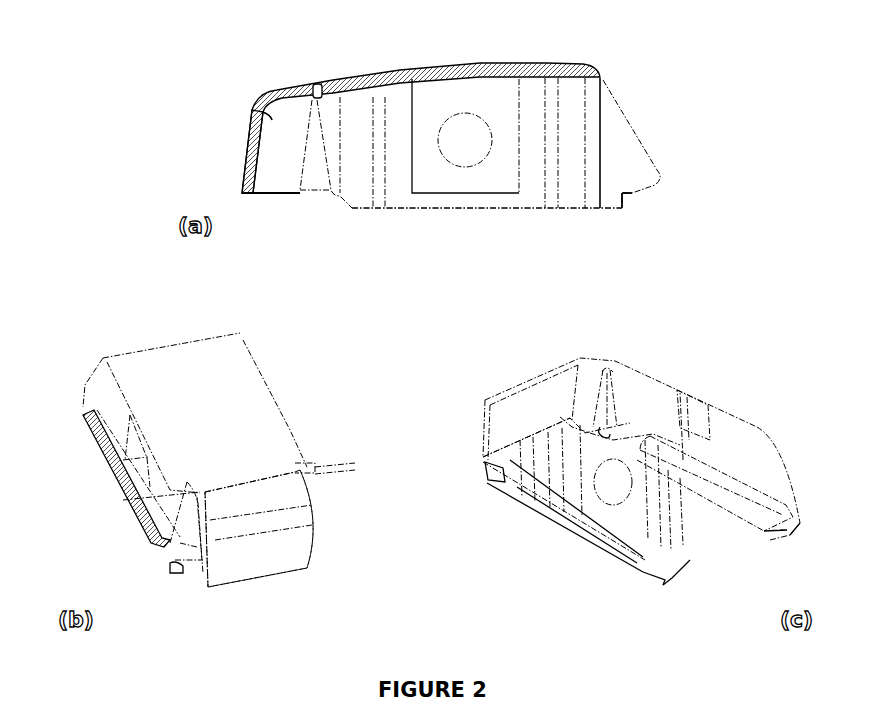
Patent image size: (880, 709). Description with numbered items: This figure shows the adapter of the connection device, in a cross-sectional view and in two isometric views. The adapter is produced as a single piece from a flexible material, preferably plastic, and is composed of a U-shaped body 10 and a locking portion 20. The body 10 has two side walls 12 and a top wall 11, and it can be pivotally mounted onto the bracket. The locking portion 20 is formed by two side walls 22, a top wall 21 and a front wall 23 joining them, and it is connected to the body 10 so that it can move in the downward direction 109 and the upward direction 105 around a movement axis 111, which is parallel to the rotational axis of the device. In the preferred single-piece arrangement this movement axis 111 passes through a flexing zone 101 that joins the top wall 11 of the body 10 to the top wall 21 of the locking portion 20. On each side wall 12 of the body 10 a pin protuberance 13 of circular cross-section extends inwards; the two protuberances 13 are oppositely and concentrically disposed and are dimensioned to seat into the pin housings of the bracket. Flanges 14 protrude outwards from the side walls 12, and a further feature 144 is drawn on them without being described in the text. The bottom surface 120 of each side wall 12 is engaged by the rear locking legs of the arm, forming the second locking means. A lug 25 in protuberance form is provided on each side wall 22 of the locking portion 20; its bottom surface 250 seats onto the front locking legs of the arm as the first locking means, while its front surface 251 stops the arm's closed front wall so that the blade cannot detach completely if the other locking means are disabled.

The body 10 is at (392, 58).
The top wall 11 is at (485, 70).
The side walls 12 is at (622, 128).
The pin protuberance 13 is at (635, 502).
The flanges 14 is at (422, 212).
The locking portion 20 is at (250, 85).
The top wall 21 is at (295, 88).
The side walls 22 is at (265, 110).
The front wall 23 is at (250, 138).
The lug 25 is at (182, 567).
The flexing zone 101 is at (318, 84).
The upward direction 105 is at (117, 126).
The downward direction 109 is at (117, 130).
The movement axis 111 is at (318, 462).
The bottom surface 120 is at (633, 195).
The rail notch 144 is at (622, 210).
The bottom surfaces 250 is at (603, 435).
The front surface 251 is at (188, 564).